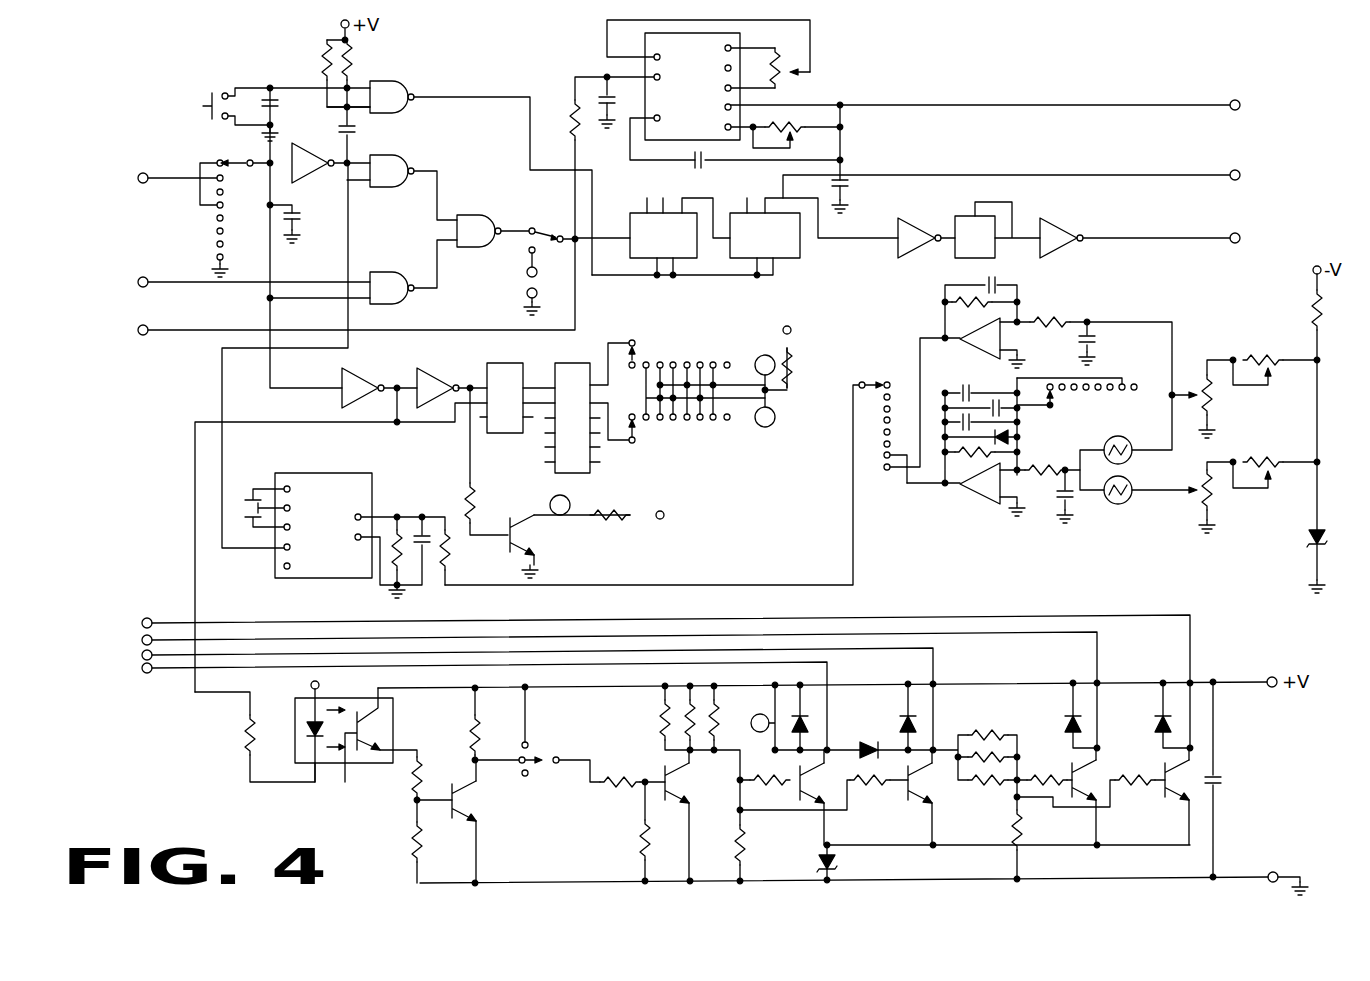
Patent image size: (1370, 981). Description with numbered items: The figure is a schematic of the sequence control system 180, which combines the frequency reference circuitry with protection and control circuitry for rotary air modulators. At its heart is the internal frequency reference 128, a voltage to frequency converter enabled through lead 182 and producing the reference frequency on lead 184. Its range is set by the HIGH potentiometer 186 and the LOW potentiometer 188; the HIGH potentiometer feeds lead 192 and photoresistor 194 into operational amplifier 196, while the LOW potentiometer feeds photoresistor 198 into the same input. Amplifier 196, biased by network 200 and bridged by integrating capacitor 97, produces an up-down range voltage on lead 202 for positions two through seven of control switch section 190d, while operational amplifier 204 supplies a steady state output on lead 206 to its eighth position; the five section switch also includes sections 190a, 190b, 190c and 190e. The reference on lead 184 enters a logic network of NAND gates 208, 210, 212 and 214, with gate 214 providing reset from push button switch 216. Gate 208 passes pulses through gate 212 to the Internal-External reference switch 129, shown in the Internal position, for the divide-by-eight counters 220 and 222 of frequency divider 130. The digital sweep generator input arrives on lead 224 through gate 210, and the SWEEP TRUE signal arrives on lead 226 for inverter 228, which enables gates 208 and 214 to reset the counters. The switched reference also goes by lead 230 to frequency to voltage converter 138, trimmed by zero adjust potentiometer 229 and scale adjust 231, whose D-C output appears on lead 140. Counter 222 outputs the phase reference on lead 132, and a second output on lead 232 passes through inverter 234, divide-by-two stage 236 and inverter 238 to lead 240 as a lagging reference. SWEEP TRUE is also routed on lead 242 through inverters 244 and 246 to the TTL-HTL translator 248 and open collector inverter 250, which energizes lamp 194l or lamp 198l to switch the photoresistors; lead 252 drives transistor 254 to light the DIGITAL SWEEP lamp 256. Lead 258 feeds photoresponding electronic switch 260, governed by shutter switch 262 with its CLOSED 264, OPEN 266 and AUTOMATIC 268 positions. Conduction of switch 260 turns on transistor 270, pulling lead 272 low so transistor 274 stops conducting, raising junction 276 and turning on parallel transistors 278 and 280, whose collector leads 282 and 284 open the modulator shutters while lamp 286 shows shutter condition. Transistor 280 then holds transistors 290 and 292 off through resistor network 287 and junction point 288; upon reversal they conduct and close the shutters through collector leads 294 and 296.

The integrating capacitor 97 is at (1002, 392).
The internal frequency reference 128 is at (347, 535).
The Internal-External reference switch 129 is at (558, 224).
The frequency divider 130 is at (812, 262).
The lead 132 is at (1136, 175).
The frequency to voltage converter 138 is at (719, 94).
The lead 140 is at (1126, 105).
The sequence control system 180 is at (852, 50).
The lead 182 is at (592, 584).
The lead 184 is at (223, 457).
The HIGH potentiometer 186 is at (1215, 396).
The LOW potentiometer 188 is at (1215, 500).
The control switch section 190a is at (244, 226).
The control switch section 190b is at (692, 367).
The control switch section 190c is at (679, 435).
The control switch section 190d is at (885, 433).
The control switch section 190e is at (1092, 398).
The lead 192 is at (1175, 431).
The photoresistor 194 is at (1128, 461).
The lamp 194l is at (775, 420).
The operational amplifier 196 is at (978, 490).
The photoresistor 198 is at (1128, 502).
The lamp 198l is at (769, 355).
The network 200 is at (1030, 439).
The lead 202 is at (929, 487).
The operational amplifier 204 is at (971, 344).
The lead 206 is at (918, 346).
The NAND gate 208 is at (396, 156).
The NAND gate 210 is at (390, 272).
The NAND gate 212 is at (474, 214).
The NAND gate 214 is at (386, 82).
The push button switch 216 is at (212, 100).
The divide-by-eight counter 220 is at (652, 238).
The divide-by-eight counter 222 is at (745, 238).
The lead 224 is at (162, 286).
The lead 226 is at (178, 181).
The inverter 228 is at (302, 178).
The potentiometer 229 is at (791, 77).
The lead 230 is at (590, 74).
The scale adjust 231 is at (787, 139).
The lead 232 is at (820, 237).
The inverter 234 is at (902, 218).
The divide-by-two stage 236 is at (997, 230).
The inverter 238 is at (1065, 218).
The lead 240 is at (1156, 238).
The lead 242 is at (274, 270).
The inverter 244 is at (350, 380).
The inverter 246 is at (425, 379).
The TTL-HTL translator 248 is at (493, 365).
The open collector inverter 250 is at (570, 363).
The lead 252 is at (472, 472).
The NPN common-emitter transistor 254 is at (545, 544).
The lamp 256 is at (570, 505).
The lead 258 is at (380, 423).
The photoresponding electronic switch 260 is at (358, 766).
The shutter switch 262 is at (558, 762).
The shutter CLOSED position 264 is at (528, 742).
The shutter OPEN position 266 is at (520, 757).
The AUTOMATIC position 268 is at (526, 776).
The NPN transistor 270 is at (460, 823).
The lead 272 is at (595, 783).
The NPN transistor 274 is at (700, 783).
The junction 276 is at (738, 784).
The NPN transistor 278 is at (866, 815).
The NPN transistor 280 is at (993, 764).
The collector lead 282 is at (160, 672).
The collector lead 284 is at (140, 657).
The lamp 286 is at (765, 716).
The resistor network 287 is at (985, 735).
The junction point 288 is at (1017, 778).
The NPN transistor 290 is at (1090, 764).
The NPN transistor 292 is at (1159, 779).
The collector lead 294 is at (140, 637).
The collector lead 296 is at (163, 622).